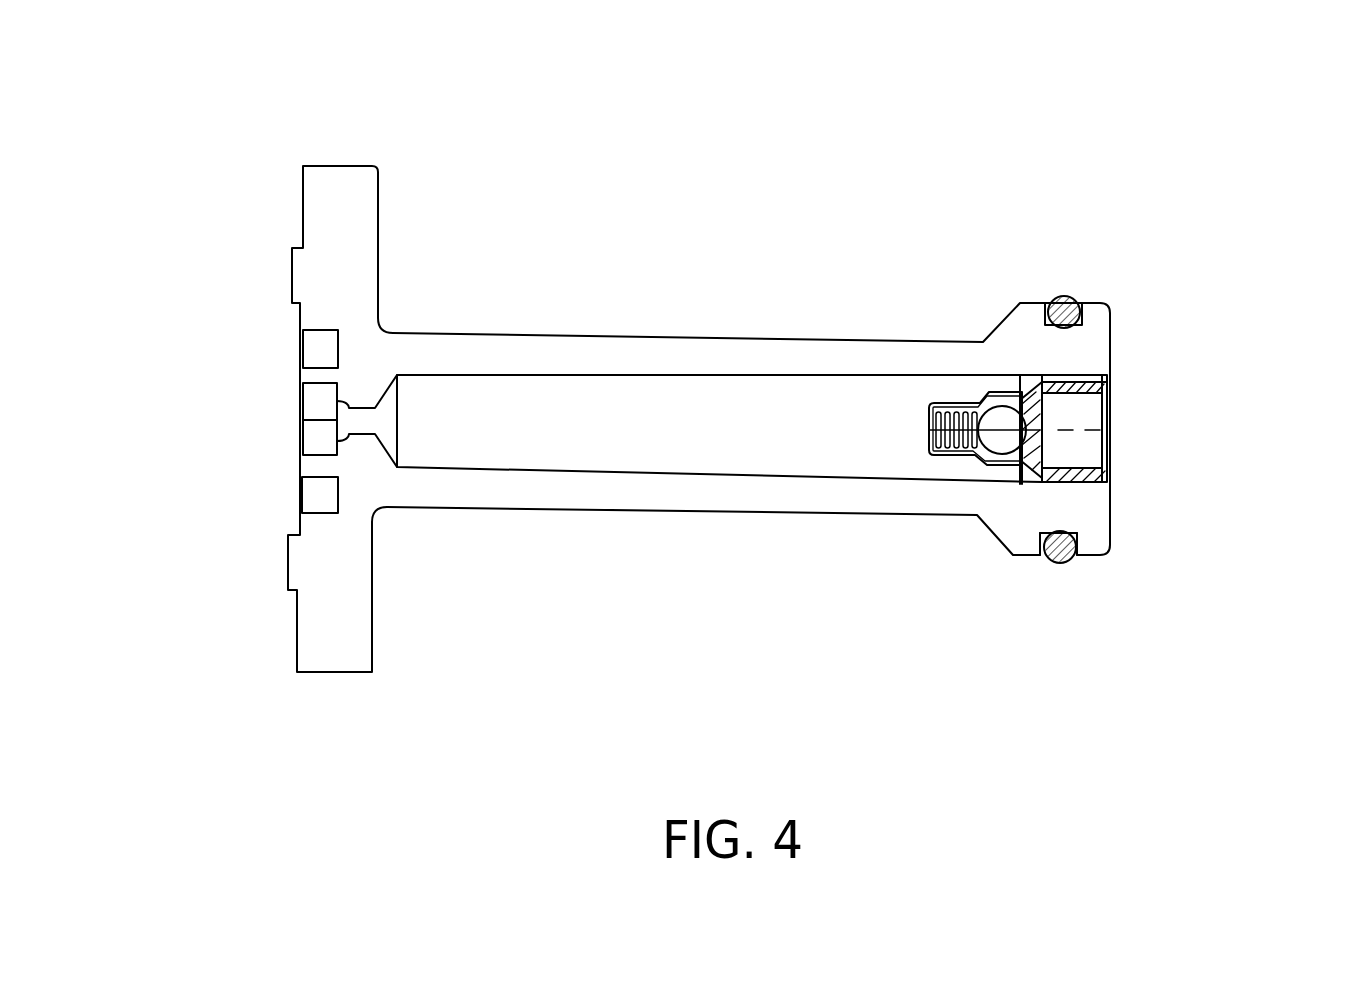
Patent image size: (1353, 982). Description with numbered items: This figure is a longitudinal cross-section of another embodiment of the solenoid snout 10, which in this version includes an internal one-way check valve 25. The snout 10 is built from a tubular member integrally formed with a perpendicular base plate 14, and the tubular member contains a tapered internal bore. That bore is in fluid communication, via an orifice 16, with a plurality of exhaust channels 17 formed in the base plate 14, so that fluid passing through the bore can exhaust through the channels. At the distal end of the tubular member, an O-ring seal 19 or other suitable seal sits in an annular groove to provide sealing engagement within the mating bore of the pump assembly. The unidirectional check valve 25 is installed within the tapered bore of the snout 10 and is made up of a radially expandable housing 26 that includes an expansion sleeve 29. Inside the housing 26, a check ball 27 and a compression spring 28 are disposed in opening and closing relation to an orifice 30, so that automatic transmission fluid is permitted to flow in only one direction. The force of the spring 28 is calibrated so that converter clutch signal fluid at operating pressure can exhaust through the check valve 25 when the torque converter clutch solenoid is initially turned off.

The solenoid snout 10 is at (697, 150).
The base plate 14 is at (316, 193).
The orifice 16 is at (373, 420).
The exhaust channels 17 is at (310, 348).
The O-ring seal 19 is at (1062, 565).
The one-way check valve 25 is at (1142, 387).
The radially expandable housing 26 is at (1028, 380).
The check ball 27 is at (994, 403).
The compression spring 28 is at (947, 448).
The expansion sleeve 29 is at (1082, 391).
The orifice 30 is at (1045, 438).